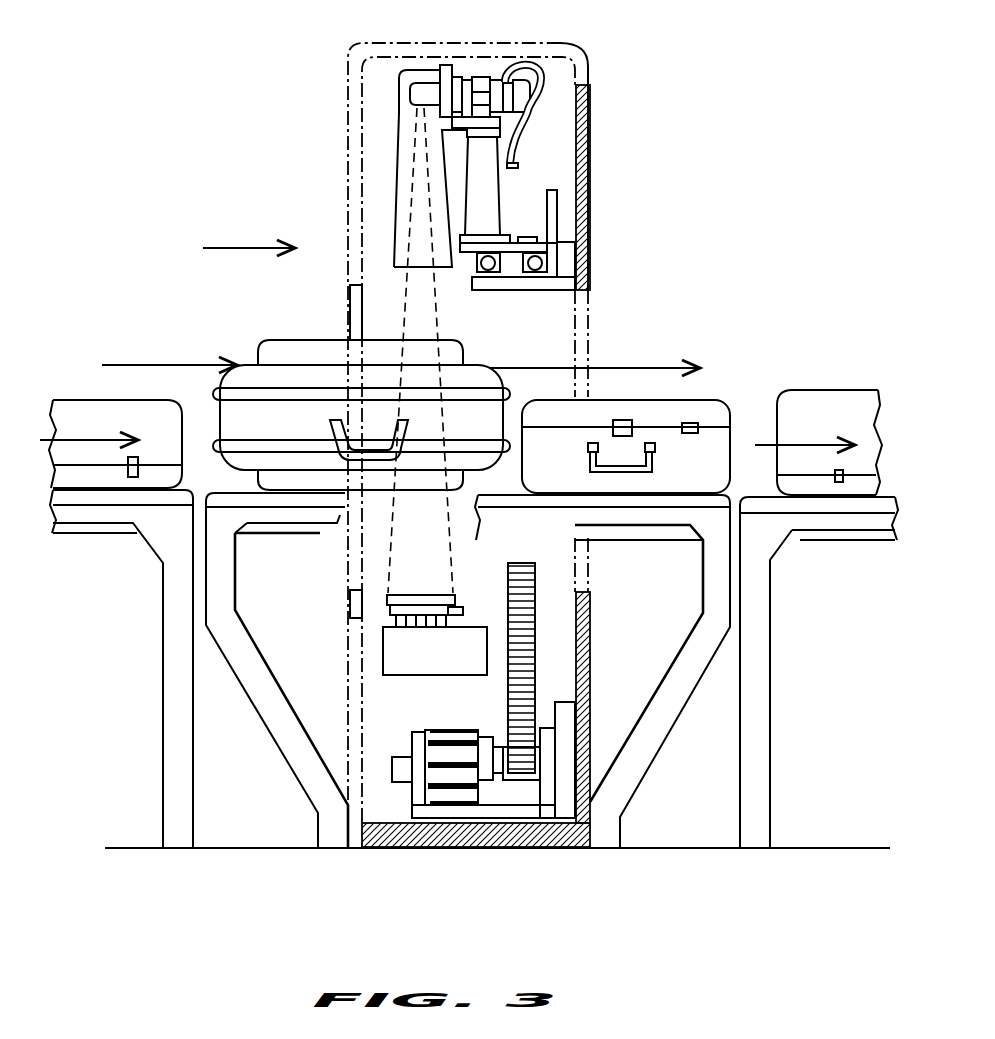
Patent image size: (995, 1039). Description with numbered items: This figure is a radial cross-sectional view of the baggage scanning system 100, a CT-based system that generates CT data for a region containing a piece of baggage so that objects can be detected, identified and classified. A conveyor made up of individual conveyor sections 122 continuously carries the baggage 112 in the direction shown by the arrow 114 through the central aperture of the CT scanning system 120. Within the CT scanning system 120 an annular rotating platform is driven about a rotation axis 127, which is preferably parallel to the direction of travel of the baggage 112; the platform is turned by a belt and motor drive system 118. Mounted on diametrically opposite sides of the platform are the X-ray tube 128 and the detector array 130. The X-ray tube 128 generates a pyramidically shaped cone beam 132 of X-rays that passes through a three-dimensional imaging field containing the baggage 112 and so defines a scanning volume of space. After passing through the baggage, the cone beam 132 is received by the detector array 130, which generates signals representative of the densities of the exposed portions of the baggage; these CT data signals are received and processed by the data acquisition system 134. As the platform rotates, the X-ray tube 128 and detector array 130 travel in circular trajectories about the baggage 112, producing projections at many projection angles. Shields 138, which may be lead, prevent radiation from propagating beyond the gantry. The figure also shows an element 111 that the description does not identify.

The baggage scanning system 100 is at (760, 902).
The wall 111 is at (577, 656).
The baggage 112 is at (310, 338).
The arrow 114 is at (244, 248).
The motor drive system 118 is at (482, 848).
The CT scanning system 120 is at (425, 40).
The conveyor sections 122 is at (772, 662).
The rotation axis 127 is at (157, 365).
The X-ray tube 128 is at (475, 83).
The detector array 130 is at (413, 593).
The cone beam 132 is at (440, 323).
The data acquisition system 134 is at (383, 675).
The shields 138 is at (392, 609).